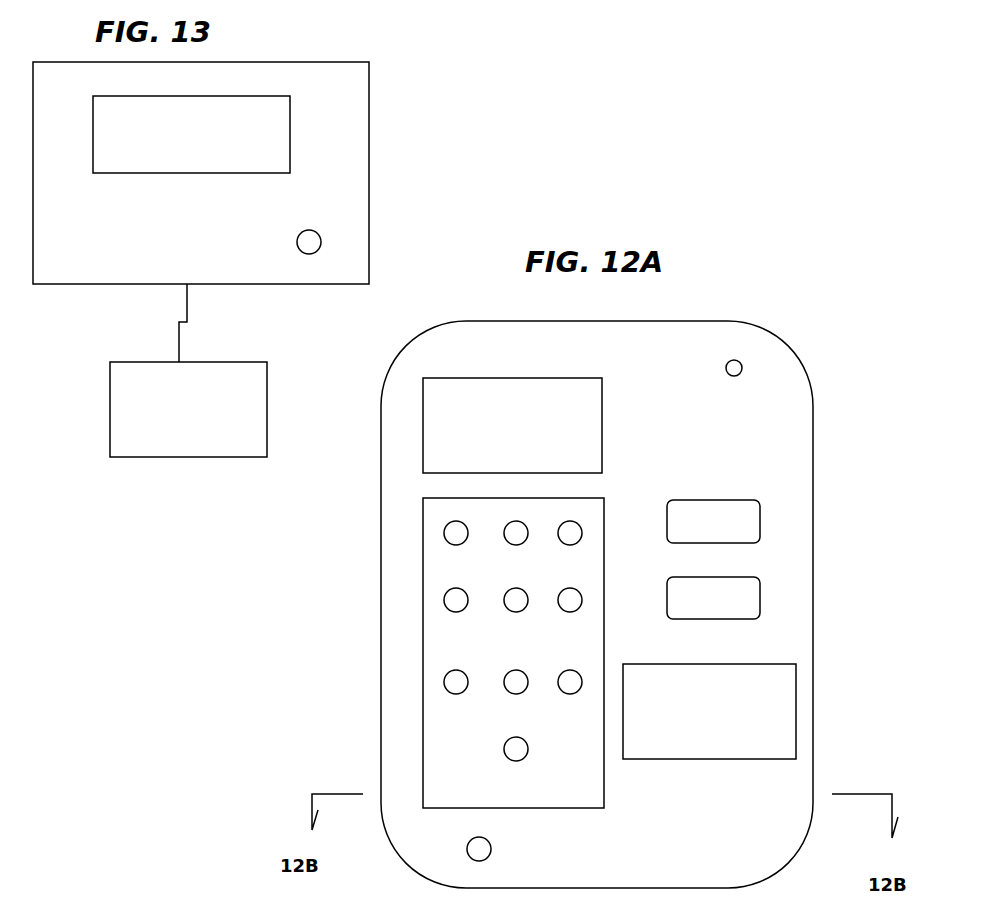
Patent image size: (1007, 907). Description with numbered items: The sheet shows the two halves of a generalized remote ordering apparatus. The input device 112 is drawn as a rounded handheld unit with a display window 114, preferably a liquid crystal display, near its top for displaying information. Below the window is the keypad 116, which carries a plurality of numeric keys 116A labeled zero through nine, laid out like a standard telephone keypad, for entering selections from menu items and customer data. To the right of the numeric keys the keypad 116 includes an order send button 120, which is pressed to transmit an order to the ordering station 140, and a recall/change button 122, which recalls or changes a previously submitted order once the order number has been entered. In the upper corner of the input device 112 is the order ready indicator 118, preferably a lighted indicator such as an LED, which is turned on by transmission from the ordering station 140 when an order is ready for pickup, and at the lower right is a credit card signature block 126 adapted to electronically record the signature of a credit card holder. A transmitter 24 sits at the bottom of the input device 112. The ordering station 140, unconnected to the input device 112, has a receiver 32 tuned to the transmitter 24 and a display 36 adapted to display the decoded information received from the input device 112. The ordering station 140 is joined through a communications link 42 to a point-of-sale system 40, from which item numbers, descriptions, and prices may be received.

In FIG. 13, the ordering station 140 is at (358, 62).
In FIG. 13, the display 36 is at (265, 130).
In FIG. 13, the receiver 32 is at (318, 239).
In FIG. 13, the communications link 42 is at (197, 318).
In FIG. 13, the point-of-sale system 40 is at (110, 422).
In FIG. 12A, the input device 112 is at (813, 402).
In FIG. 12A, the display window 114 is at (578, 377).
In FIG. 12A, the keypad 116 is at (422, 552).
In FIG. 12A, the numeric keys 116A is at (457, 605).
In FIG. 12A, the order ready indicator 118 is at (725, 362).
In FIG. 12A, the order send button 120 is at (742, 507).
In FIG. 12A, the recall/change button 122 is at (753, 575).
In FIG. 12A, the credit card signature block 126 is at (752, 690).
In FIG. 12A, the transmitter 24 is at (468, 845).